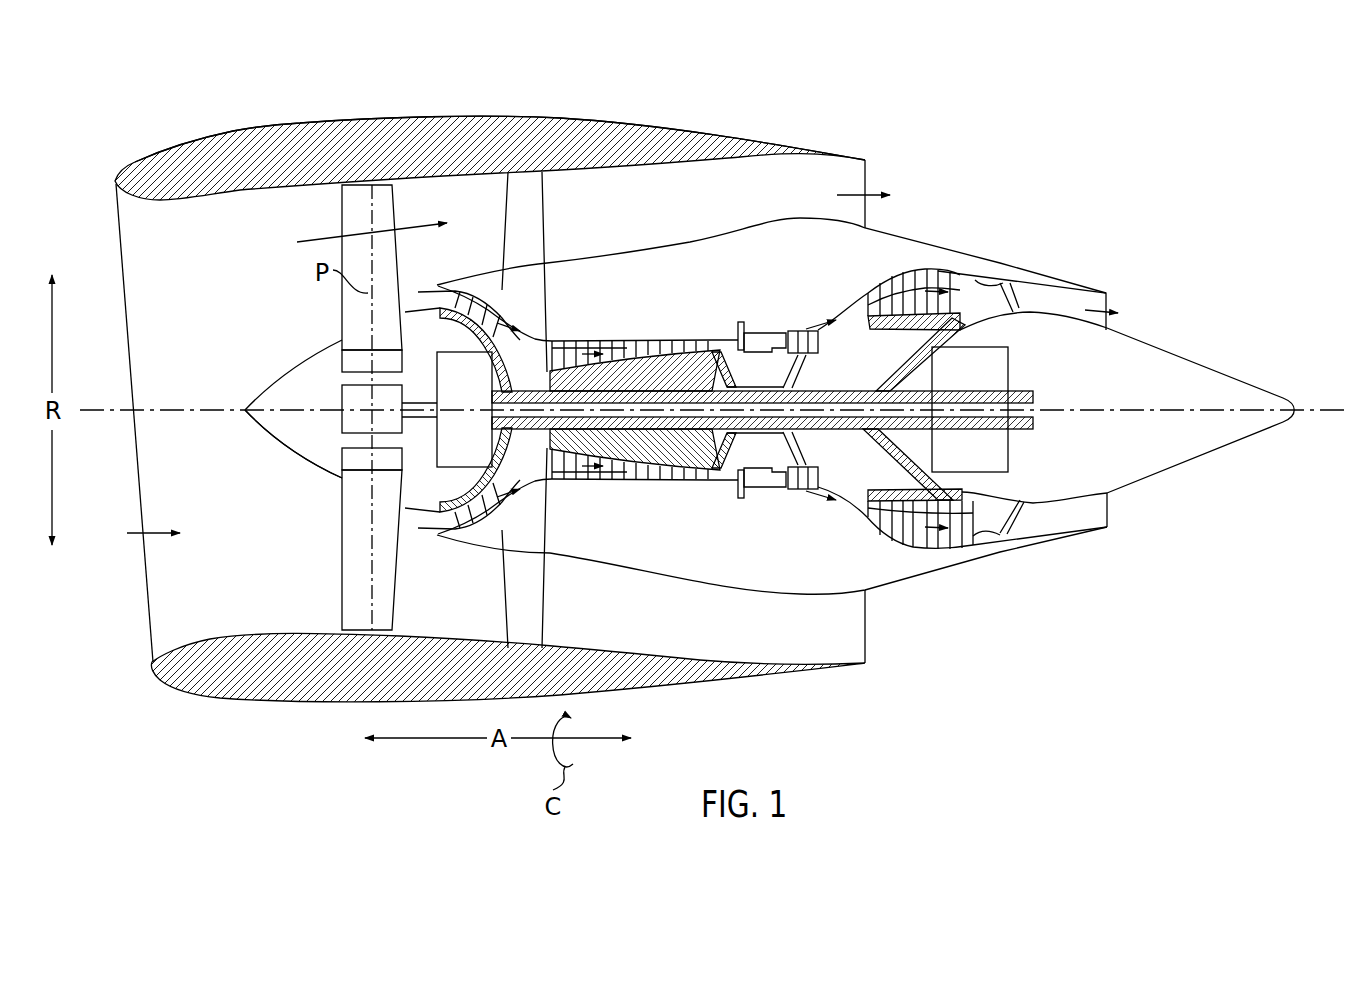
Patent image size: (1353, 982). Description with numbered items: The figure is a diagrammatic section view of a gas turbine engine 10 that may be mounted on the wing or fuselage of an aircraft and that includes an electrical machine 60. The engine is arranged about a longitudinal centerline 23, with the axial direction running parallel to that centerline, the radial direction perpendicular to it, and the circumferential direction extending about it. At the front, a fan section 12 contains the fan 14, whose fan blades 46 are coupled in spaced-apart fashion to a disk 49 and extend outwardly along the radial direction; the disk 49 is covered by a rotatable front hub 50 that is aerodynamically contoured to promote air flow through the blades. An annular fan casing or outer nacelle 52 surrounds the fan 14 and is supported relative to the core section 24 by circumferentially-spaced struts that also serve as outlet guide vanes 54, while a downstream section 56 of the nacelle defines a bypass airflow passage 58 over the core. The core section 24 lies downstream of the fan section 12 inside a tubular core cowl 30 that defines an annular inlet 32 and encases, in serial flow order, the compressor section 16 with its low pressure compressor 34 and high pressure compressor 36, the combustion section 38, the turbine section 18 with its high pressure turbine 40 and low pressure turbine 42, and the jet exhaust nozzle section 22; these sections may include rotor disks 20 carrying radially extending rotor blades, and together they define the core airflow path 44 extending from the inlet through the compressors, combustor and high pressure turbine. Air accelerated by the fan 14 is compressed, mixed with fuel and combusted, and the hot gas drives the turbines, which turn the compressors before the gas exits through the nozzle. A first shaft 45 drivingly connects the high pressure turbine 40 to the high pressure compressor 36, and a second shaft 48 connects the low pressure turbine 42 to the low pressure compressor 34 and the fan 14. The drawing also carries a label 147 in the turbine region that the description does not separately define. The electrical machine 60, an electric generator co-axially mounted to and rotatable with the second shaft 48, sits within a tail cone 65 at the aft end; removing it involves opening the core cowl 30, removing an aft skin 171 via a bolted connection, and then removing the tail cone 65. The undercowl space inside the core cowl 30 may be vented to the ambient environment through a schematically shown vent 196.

The gas turbine engine 10 is at (1091, 162).
The fan section 12 is at (260, 199).
The fan 14 is at (259, 437).
The compressor section 16 is at (621, 332).
The turbine section 18 is at (922, 251).
The rotor disk 20 is at (920, 548).
The jet exhaust nozzle section 22 is at (1018, 527).
The longitudinal centerline 23 is at (1313, 409).
The core section 24 is at (718, 336).
The core cowl 30 is at (664, 573).
The annular inlet 32 is at (448, 520).
The low pressure compressor 34 is at (481, 543).
The high pressure compressor 36 is at (565, 471).
The combustion section 38 is at (752, 476).
The high pressure turbine 40 is at (828, 486).
The low pressure turbine 42 is at (977, 548).
The core airflow path 44 is at (514, 475).
The first shaft 45 is at (791, 378).
The fan blades 46 is at (340, 572).
The second shaft 48 is at (1022, 388).
The disk 49 is at (346, 362).
The front hub 50 is at (280, 437).
The outer nacelle 52 is at (310, 699).
The outlet guide vanes 54 is at (549, 222).
The downstream section 56 is at (731, 136).
The bypass airflow passage 58 is at (705, 202).
The electrical machine 60 is at (1010, 336).
The tail cone 65 is at (1187, 353).
The low pressure turbine vanes 147 is at (958, 305).
The aft skin 171 is at (1092, 283).
The vent 196 is at (1112, 507).